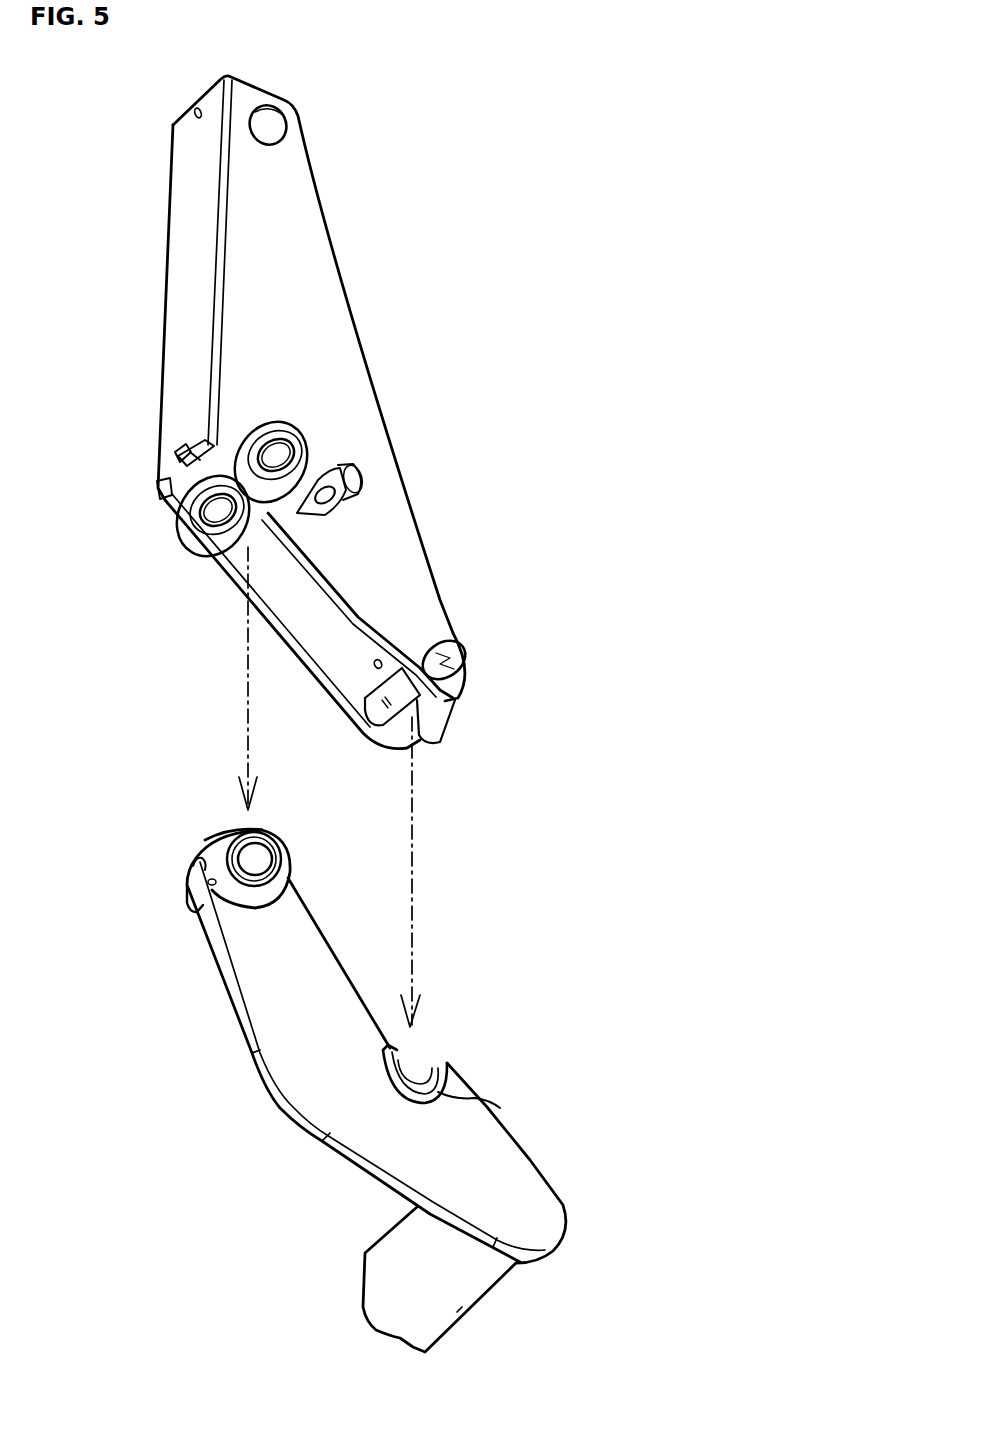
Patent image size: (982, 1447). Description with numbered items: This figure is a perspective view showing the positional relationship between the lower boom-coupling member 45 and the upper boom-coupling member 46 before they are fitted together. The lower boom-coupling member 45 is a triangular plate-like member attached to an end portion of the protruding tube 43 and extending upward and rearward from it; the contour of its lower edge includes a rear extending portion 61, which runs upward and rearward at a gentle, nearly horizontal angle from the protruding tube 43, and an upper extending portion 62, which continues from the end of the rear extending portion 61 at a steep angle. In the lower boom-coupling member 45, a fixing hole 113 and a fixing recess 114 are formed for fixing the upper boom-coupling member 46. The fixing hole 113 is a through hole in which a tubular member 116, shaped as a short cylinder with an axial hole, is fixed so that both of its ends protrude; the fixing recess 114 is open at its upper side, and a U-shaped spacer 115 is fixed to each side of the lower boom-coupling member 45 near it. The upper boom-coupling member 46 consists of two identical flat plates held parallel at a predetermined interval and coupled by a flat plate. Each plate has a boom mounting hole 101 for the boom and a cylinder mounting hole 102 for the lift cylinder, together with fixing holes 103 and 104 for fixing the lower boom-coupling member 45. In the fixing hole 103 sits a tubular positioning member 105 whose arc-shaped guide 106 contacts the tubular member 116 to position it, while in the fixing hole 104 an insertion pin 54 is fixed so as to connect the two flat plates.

The upper boom-coupling member 46 is at (435, 273).
The boom mounting hole 101 is at (284, 122).
The positioning member 105 is at (305, 450).
The fixing hole 103 is at (230, 440).
The arc-shaped guide 106 is at (188, 457).
The cylinder mounting hole 102 is at (362, 493).
The fixing hole 104 is at (472, 654).
The insertion pin 54 is at (420, 732).
The lower boom-coupling member 45 is at (503, 1060).
The tubular member 116 is at (283, 862).
The fixing hole 113 is at (197, 903).
The upper extending portion 62 is at (225, 982).
The fixing recess 114 is at (420, 1055).
The U-shaped spacer 115 is at (500, 1108).
The rear extending portion 61 is at (346, 1163).
The protruding tube 43 is at (457, 1312).